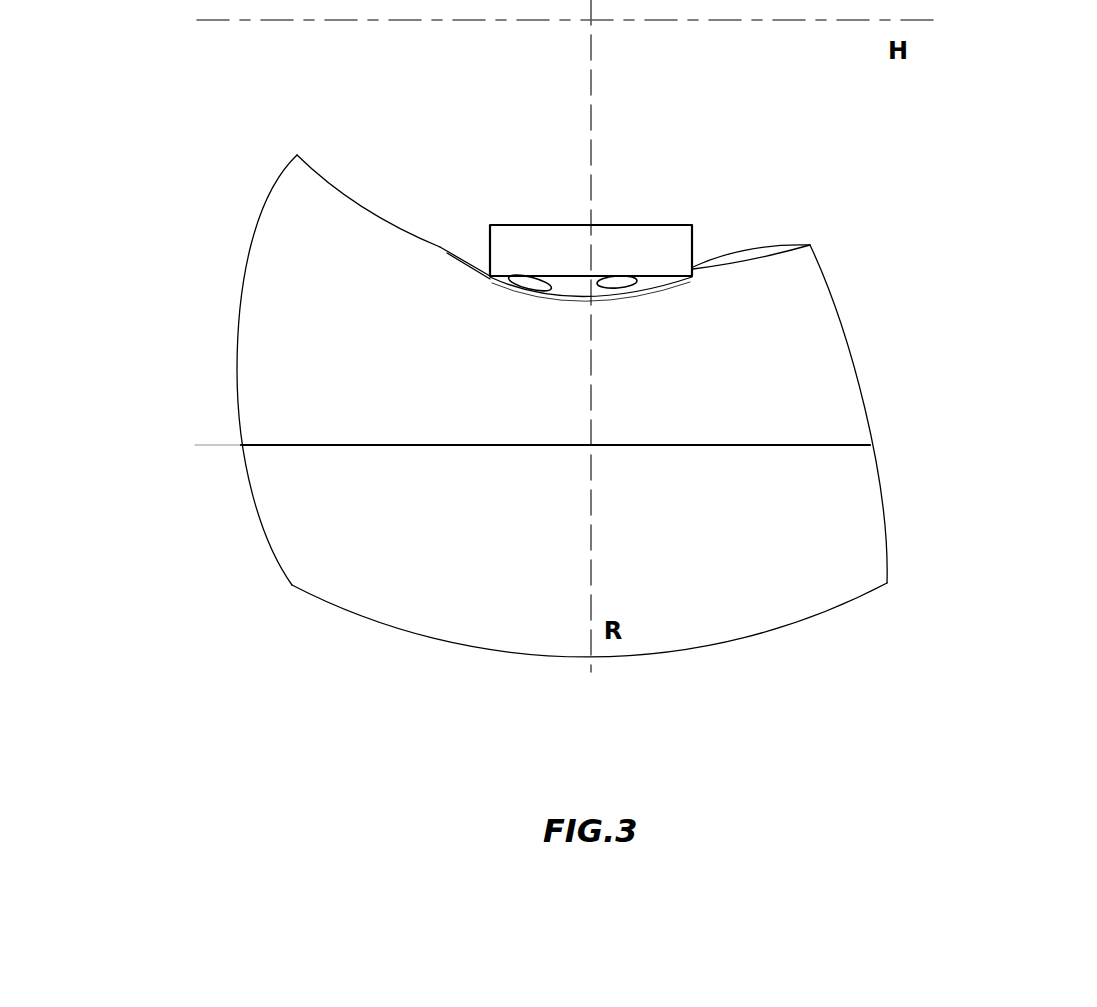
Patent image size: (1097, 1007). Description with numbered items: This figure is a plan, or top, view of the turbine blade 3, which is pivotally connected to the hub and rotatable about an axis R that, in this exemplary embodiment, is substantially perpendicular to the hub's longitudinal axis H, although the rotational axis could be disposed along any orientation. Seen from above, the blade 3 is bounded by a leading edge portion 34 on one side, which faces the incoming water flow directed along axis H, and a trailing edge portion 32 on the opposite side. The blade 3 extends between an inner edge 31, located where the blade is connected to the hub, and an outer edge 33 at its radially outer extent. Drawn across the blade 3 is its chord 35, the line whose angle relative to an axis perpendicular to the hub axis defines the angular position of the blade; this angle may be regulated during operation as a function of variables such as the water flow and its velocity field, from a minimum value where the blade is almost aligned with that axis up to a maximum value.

The blade 3 is at (569, 457).
The inner edge 31 is at (723, 239).
The trailing edge portion 32 is at (220, 346).
The outer edge 33 is at (726, 660).
The leading edge portion 34 is at (896, 515).
The chord 35 is at (444, 457).